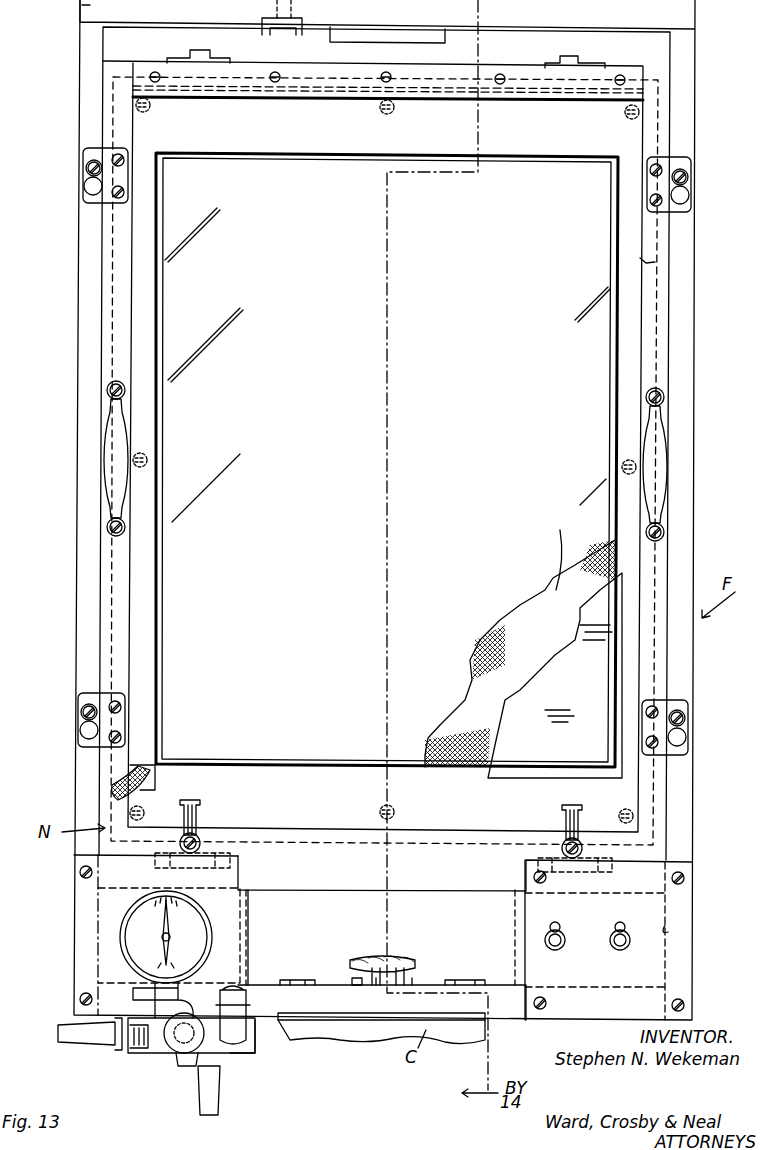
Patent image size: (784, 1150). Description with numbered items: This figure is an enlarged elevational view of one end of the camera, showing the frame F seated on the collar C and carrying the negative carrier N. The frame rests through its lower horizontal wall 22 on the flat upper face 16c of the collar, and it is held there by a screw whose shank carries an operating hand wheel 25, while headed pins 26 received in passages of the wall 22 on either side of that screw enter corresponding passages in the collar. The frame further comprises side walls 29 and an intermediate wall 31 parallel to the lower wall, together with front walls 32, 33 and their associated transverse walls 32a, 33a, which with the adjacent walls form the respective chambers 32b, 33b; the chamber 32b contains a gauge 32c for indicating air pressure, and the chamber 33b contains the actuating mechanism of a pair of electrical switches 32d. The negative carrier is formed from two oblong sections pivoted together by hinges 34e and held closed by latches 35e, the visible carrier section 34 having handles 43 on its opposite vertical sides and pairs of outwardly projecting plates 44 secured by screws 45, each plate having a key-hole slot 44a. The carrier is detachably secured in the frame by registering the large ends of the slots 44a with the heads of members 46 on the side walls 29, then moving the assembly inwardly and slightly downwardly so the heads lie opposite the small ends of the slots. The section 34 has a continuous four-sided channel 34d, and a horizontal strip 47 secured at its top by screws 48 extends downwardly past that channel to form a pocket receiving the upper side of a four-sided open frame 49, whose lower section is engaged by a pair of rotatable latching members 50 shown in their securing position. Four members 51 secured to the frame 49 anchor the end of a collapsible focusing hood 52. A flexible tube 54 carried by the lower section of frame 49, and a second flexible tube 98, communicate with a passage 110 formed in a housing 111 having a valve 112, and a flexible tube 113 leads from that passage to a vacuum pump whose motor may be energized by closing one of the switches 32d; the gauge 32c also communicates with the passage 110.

The side walls 29 is at (88, 5).
The carrier section 34 is at (490, 70).
The channel 34d is at (645, 262).
The hinges 34e is at (225, 855).
The horizontal strip 47 is at (360, 96).
The screws 48 is at (384, 74).
The latches 35e is at (212, 58).
The frame 49 is at (320, 154).
The members 51 is at (382, 160).
The collapsible focusing hood 52 is at (613, 516).
The plates 44 is at (83, 196).
The key-hole slot 44a is at (84, 187).
The members 46 is at (86, 167).
The screws 45 is at (125, 162).
The handles 43 is at (112, 420).
The flexible tube 54 is at (120, 786).
The latching members 50 is at (197, 817).
The front wall 32 is at (82, 951).
The chamber 32b is at (98, 907).
The gauge 32c is at (195, 930).
The transverse wall 32a is at (250, 938).
The electrical switches 32d is at (620, 924).
The intermediate wall 31 is at (478, 884).
The front wall 33 is at (676, 972).
The transverse wall 33a is at (516, 920).
The chamber 33b is at (668, 932).
The lower horizontal wall 22 is at (326, 985).
The operating hand wheel 25 is at (393, 956).
The headed pins 26 is at (292, 978).
The flat upper face 16c is at (352, 1020).
The flexible tube 98 is at (58, 1033).
The passage 110 is at (160, 1040).
The housing 111 is at (135, 1036).
The valve 112 is at (192, 1056).
The flexible tube 113 is at (220, 1090).